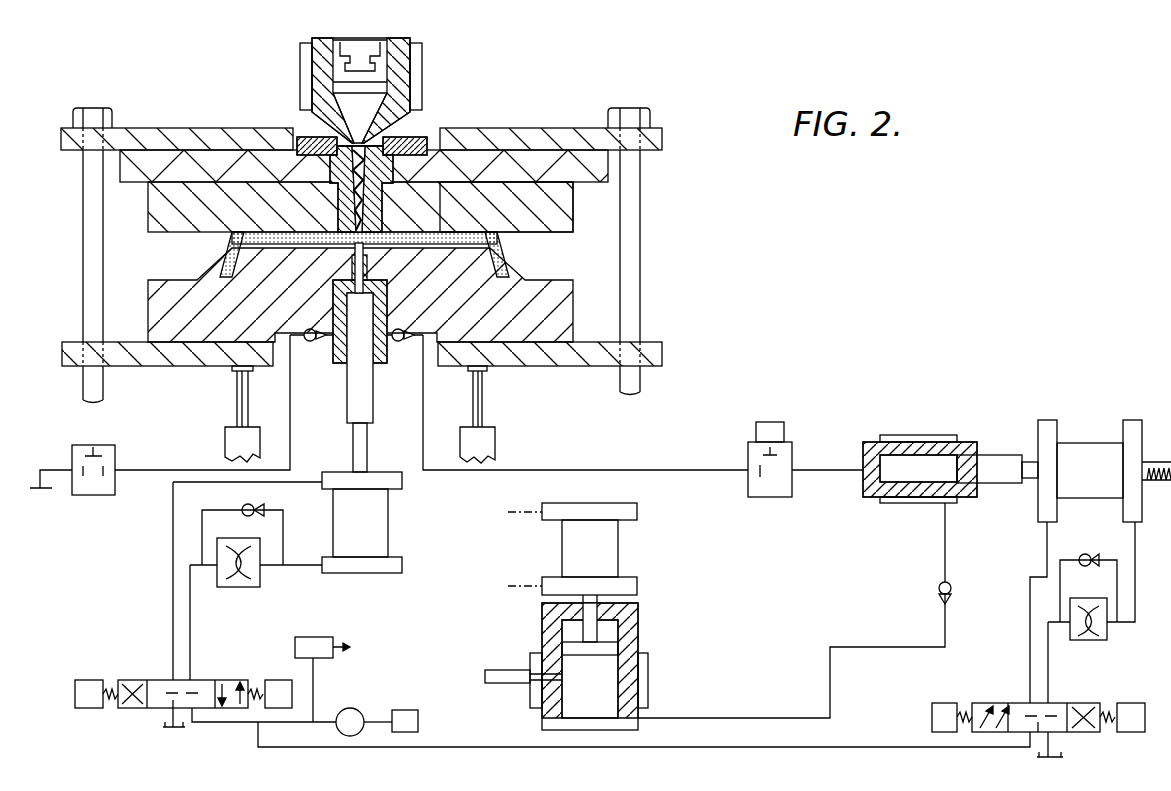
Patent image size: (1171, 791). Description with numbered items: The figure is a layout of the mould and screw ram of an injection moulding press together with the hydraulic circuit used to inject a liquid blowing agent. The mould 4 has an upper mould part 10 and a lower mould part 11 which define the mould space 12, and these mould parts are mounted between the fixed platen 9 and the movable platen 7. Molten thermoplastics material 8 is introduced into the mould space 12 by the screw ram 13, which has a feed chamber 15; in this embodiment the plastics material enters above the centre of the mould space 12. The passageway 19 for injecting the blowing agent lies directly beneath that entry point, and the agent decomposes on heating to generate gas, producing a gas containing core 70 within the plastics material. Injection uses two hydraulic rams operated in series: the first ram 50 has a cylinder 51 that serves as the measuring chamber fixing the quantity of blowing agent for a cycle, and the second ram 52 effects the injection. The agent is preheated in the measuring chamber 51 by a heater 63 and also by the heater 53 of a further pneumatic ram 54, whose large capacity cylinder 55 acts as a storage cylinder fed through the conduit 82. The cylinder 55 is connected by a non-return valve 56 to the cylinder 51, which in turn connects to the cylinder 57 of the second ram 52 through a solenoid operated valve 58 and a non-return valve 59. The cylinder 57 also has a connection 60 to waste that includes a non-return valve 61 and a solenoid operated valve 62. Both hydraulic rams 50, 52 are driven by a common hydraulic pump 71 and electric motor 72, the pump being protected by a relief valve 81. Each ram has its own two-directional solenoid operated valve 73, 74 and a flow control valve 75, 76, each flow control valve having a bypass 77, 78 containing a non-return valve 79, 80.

The mould 4 is at (122, 198).
The movable platen 7 is at (150, 358).
The molten thermoplastics material 8 is at (240, 230).
The fixed platen 9 is at (133, 128).
The upper mould part 10 is at (148, 250).
The lower mould part 11 is at (148, 302).
The mould space 12 is at (462, 228).
The screw ram 13 is at (291, 70).
The feed chamber 15 is at (365, 105).
The passageway 19 is at (360, 252).
The first hydraulic ram 50 is at (1082, 445).
The cylinder of first hydraulic ram 51 is at (907, 499).
The second hydraulic ram 52 is at (380, 523).
The heater 53 is at (530, 655).
The pneumatic ram 54 is at (618, 548).
The storage cylinder 55 is at (632, 618).
The non-return valve 56 is at (938, 588).
The cylinder of second hydraulic ram 57 is at (327, 290).
The solenoid operated valve 58 is at (748, 452).
The non-return valve 59 is at (400, 342).
The connection to waste 60 is at (138, 472).
The non-return valve 61 is at (316, 331).
The solenoid operated valve 62 is at (115, 453).
The heater 63 is at (913, 435).
The gas containing core 70 is at (270, 230).
The hydraulic pump 71 is at (355, 709).
The electric motor 72 is at (404, 710).
The two-directional solenoid operated valve 73 is at (1013, 692).
The two-directional solenoid operated valve 74 is at (163, 670).
The flow control valve 75 is at (1090, 641).
The flow control valve 76 is at (217, 547).
The bypass 77 is at (1060, 592).
The bypass 78 is at (202, 525).
The non-return valve 79 is at (1088, 553).
The non-return valve 80 is at (256, 505).
The relief valve 81 is at (295, 644).
The conduit 82 is at (498, 684).